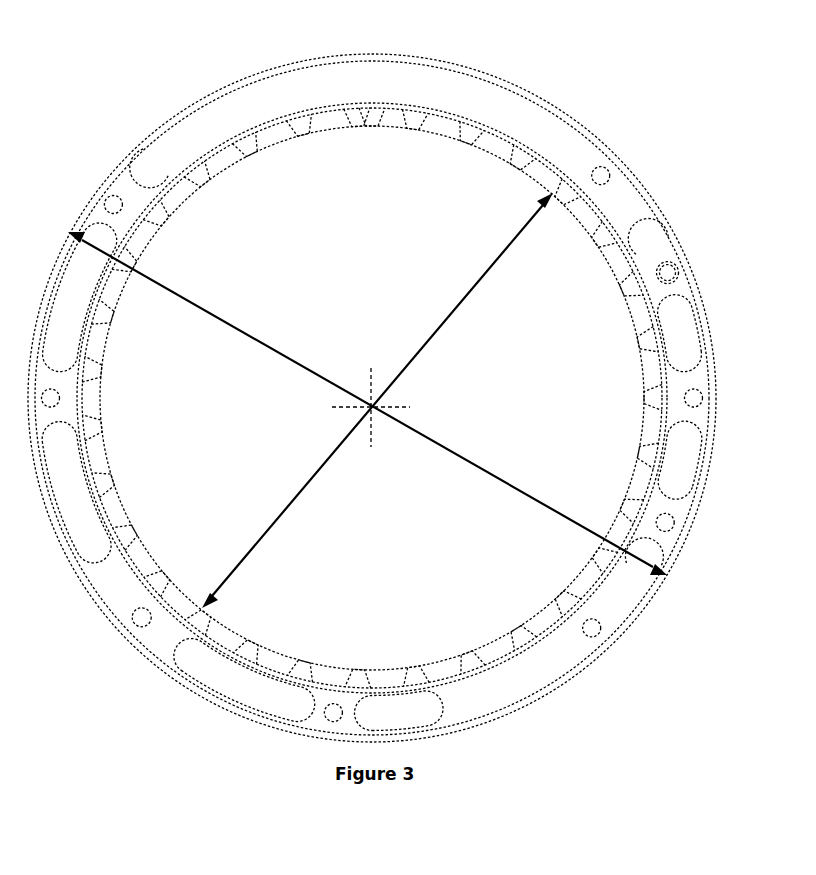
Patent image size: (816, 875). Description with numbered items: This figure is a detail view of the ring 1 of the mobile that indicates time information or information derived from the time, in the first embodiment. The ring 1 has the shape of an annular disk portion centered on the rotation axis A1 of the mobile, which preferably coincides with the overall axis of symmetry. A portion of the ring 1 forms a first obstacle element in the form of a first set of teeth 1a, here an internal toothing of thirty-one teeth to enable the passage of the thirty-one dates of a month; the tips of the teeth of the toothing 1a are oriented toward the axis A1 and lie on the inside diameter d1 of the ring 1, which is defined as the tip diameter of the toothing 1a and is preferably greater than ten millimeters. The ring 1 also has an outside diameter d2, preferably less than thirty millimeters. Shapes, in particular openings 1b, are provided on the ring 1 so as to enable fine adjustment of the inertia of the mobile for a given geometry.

The ring 1 is at (177, 130).
The first set of teeth 1a is at (382, 136).
The openings 1b is at (504, 88).
The rotation axis A1 is at (358, 390).
The inside diameter d1 is at (377, 400).
The outside diameter d2 is at (367, 403).